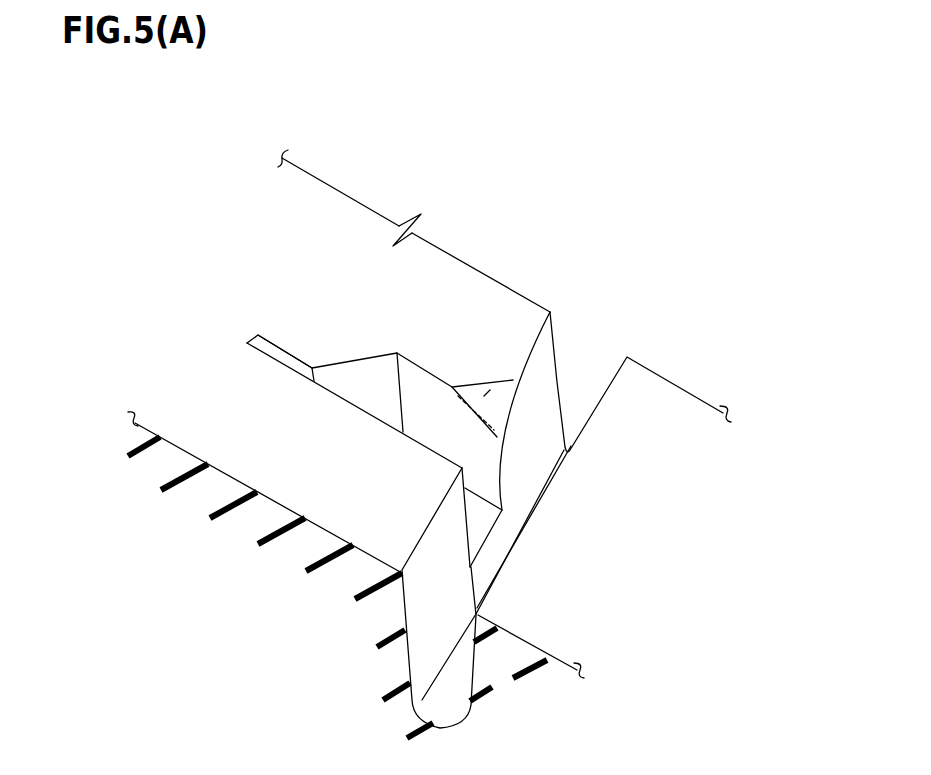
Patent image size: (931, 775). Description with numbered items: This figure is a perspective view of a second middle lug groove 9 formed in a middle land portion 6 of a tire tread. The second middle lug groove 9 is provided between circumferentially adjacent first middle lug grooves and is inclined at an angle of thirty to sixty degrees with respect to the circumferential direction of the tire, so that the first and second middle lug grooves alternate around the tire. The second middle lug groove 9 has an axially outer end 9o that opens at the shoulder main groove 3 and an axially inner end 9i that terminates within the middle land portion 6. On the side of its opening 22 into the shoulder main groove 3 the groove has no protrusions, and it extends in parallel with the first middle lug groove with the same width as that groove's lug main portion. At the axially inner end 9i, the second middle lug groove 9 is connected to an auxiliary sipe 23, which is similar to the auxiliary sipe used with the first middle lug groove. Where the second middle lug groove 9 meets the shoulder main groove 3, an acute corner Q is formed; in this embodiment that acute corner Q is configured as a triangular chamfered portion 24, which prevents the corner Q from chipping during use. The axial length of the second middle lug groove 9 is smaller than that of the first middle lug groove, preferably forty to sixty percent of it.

The shoulder main groove 3 is at (587, 352).
The second middle lug groove 9 is at (430, 397).
The axially inner end 9i is at (314, 362).
The axially outer end 9o is at (513, 472).
The triangular chamfered portion 24 is at (497, 385).
The auxiliary sipe 23 is at (310, 368).
The opening 22 is at (480, 527).
The middle land portion 6 is at (294, 467).
The acute corner Q is at (520, 412).